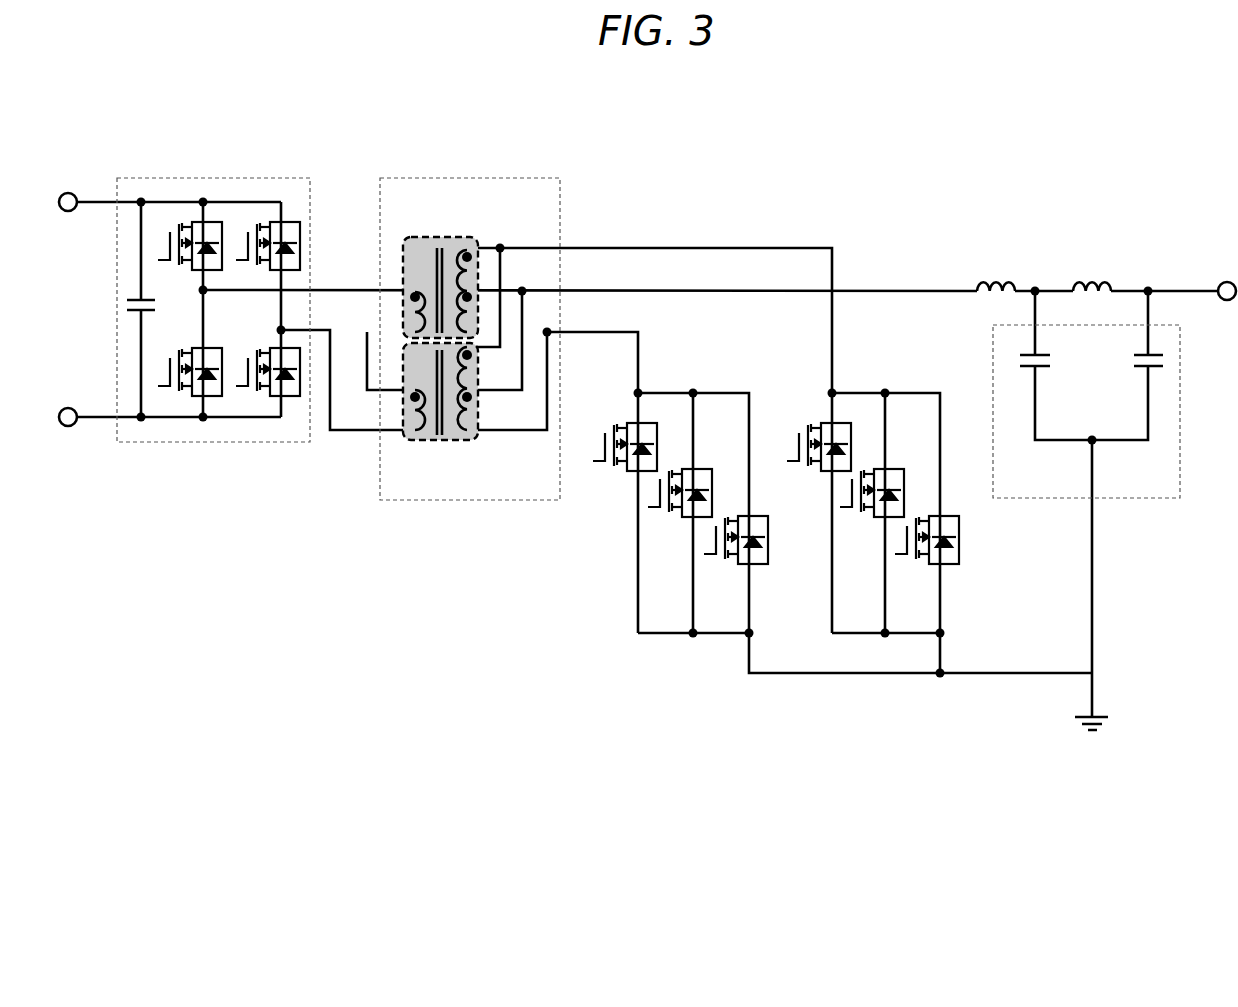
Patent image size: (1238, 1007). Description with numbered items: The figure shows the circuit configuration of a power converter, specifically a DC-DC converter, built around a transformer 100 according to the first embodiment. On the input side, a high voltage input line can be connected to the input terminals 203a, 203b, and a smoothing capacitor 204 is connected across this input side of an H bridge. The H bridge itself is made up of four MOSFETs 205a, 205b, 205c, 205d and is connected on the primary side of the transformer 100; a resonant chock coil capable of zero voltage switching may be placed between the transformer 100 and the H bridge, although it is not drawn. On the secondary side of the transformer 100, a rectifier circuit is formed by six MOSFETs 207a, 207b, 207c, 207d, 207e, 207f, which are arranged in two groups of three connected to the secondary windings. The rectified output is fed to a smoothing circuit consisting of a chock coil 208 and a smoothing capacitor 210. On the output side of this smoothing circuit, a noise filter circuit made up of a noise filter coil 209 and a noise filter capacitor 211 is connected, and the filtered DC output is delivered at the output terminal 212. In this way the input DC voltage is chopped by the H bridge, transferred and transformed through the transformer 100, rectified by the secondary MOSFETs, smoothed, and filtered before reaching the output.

The transformer 100 is at (467, 177).
The input terminal 203a is at (66, 193).
The input terminal 203b is at (70, 426).
The smoothing capacitor 204 is at (146, 283).
The MOSFET 205a is at (204, 221).
The MOSFET 205b is at (209, 400).
The MOSFET 205c is at (282, 220).
The MOSFET 205d is at (284, 400).
The MOSFET 207a is at (633, 478).
The MOSFET 207b is at (682, 522).
The MOSFET 207c is at (740, 568).
The MOSFET 207d is at (828, 480).
The MOSFET 207e is at (882, 522).
The MOSFET 207f is at (937, 562).
The chock coil 208 is at (997, 280).
The noise filter coil 209 is at (1092, 280).
The smoothing capacitor 210 is at (1022, 355).
The noise filter capacitor 211 is at (1154, 372).
The output terminal 212 is at (1225, 281).